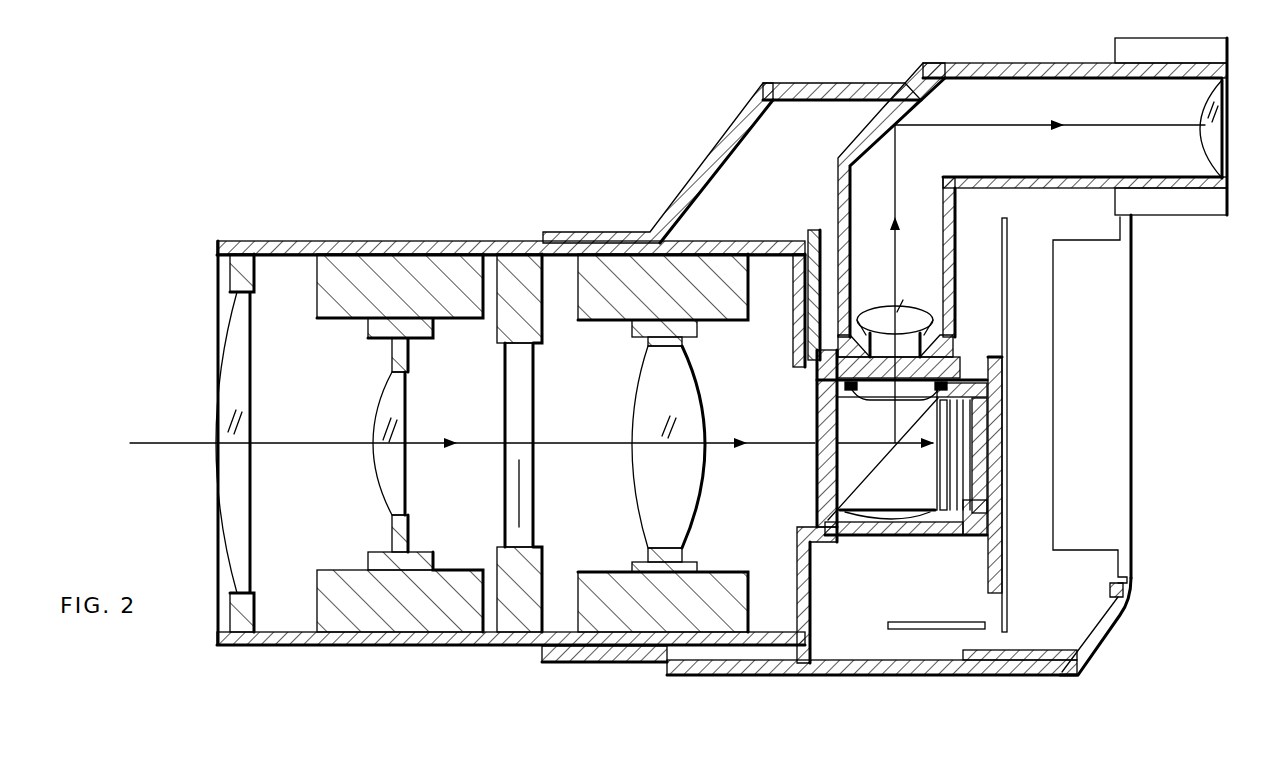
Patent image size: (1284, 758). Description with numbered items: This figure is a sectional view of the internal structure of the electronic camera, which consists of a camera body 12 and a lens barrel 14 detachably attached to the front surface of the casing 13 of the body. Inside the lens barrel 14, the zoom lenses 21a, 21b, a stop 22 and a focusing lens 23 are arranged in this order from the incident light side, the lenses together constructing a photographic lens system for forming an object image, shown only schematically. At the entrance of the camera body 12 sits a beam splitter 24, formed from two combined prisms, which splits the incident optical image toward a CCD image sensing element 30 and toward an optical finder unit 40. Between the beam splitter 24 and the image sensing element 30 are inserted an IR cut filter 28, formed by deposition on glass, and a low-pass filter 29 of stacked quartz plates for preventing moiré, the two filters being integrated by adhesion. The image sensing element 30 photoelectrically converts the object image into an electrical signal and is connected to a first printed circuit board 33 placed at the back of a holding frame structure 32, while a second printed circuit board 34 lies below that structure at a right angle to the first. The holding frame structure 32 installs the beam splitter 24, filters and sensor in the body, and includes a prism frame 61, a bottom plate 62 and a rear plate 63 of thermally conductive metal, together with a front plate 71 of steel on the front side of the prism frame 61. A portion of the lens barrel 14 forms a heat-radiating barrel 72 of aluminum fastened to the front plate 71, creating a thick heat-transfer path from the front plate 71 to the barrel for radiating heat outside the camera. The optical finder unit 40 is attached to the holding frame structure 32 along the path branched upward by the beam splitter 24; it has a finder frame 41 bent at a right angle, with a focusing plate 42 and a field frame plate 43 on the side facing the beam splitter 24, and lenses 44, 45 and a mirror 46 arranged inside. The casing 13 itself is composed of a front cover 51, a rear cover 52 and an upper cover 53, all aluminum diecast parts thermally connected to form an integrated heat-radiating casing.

The camera body 12 is at (1134, 566).
The casing 13 is at (827, 83).
The lens barrel 14 is at (322, 241).
The zoom lens 21a is at (254, 345).
The zoom lens 21b is at (382, 399).
The stop 22 is at (505, 418).
The focusing lens 23 is at (640, 388).
The beam splitter 24 is at (840, 458).
The IR cut filter 28 is at (945, 455).
The low-pass filter 29 is at (958, 535).
The CCD image sensing element 30 is at (990, 465).
The holding frame structure 32 is at (816, 432).
The first printed circuit board 33 is at (995, 272).
The second printed circuit board 34 is at (933, 630).
The optical finder unit 40 is at (1008, 59).
The finder frame 41 is at (956, 62).
The focusing plate 42 is at (835, 388).
The field frame plate 43 is at (925, 348).
The lens 44 is at (905, 310).
The lens 45 is at (1232, 100).
The mirror 46 is at (930, 106).
The front cover 51 is at (805, 677).
The rear cover 52 is at (1105, 640).
The upper cover 53 is at (721, 133).
The prism frame 61 is at (823, 507).
The bottom plate 62 is at (890, 535).
The rear plate 63 is at (1005, 370).
The front plate 71 is at (814, 230).
The heat-radiating barrel 72 is at (463, 241).